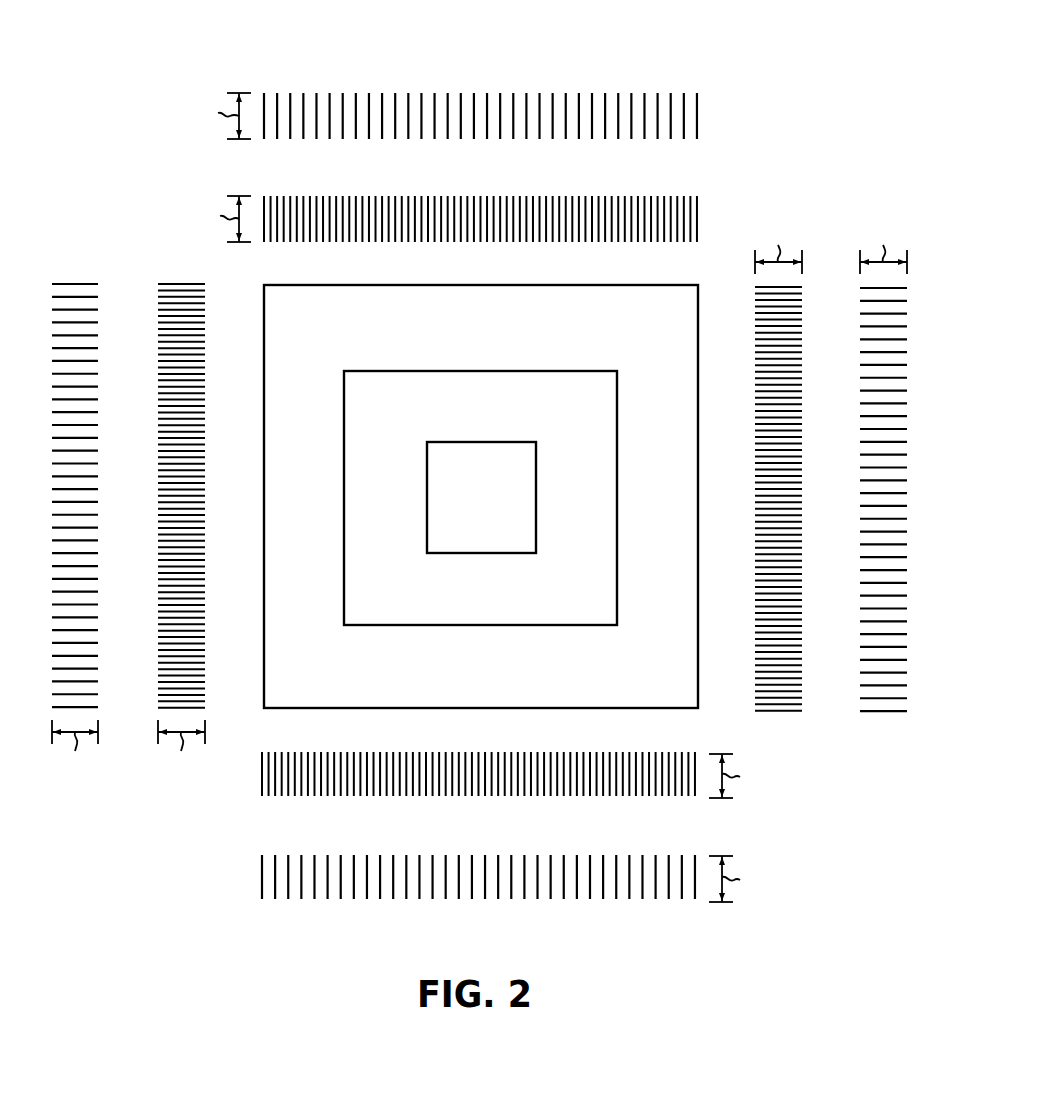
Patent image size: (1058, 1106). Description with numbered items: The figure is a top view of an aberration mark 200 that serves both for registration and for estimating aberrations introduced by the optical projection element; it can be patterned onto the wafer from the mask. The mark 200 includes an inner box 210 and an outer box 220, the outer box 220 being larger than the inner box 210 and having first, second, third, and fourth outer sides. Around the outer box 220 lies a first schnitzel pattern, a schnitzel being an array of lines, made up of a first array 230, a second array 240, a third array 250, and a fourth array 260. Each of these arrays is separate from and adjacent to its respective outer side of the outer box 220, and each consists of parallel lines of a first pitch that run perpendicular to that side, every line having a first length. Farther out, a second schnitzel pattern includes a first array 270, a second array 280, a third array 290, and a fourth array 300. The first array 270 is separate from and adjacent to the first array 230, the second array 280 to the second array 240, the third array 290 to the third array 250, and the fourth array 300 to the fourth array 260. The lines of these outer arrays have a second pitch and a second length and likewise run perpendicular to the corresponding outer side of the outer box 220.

The mark 200 is at (772, 77).
The inner box 210 is at (478, 441).
The outer box 220 is at (480, 284).
The first array 230 is at (755, 686).
The second array 240 is at (610, 750).
The third array 250 is at (204, 683).
The fourth array 260 is at (630, 193).
The first array 270 is at (861, 652).
The second array 280 is at (610, 852).
The third array 290 is at (97, 643).
The fourth array 300 is at (625, 93).